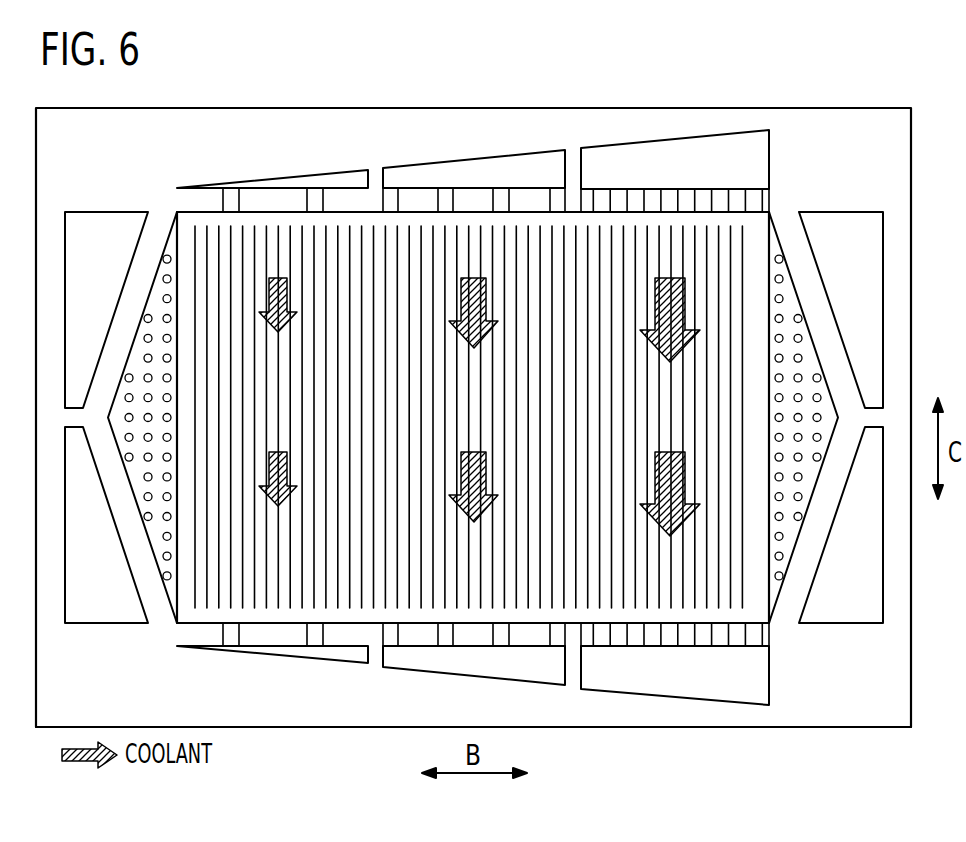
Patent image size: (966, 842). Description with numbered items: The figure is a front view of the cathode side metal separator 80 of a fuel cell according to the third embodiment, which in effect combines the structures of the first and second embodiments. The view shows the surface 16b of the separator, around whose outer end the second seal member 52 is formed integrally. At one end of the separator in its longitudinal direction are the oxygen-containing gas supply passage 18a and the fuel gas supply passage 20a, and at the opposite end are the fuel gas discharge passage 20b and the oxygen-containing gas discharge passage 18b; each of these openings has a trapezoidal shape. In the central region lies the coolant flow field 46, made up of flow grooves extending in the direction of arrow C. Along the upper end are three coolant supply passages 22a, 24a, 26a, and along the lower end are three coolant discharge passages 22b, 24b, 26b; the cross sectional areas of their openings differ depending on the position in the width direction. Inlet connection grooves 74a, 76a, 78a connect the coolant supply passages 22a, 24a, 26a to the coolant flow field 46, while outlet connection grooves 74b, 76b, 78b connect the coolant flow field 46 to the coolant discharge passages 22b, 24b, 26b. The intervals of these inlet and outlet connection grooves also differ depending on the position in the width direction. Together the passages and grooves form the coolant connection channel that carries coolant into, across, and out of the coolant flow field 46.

The cathode side metal separator 80 is at (265, 91).
The second seal member 52 is at (822, 108).
The surface 16b is at (823, 712).
The coolant flow field 46 is at (223, 244).
The fuel gas discharge passage 20b is at (106, 310).
The oxygen-containing gas discharge passage 18b is at (106, 525).
The oxygen-containing gas supply passage 18a is at (841, 310).
The fuel gas supply passage 20a is at (841, 525).
The coolant supply passage 26a is at (340, 178).
The inlet connection groove 78a is at (230, 198).
The coolant supply passage 24a is at (474, 181).
The inlet connection groove 76a is at (447, 198).
The coolant supply passage 22a is at (675, 171).
The inlet connection groove 74a is at (622, 198).
The coolant discharge passage 26b is at (333, 655).
The outlet connection groove 78b is at (230, 640).
The coolant discharge passage 24b is at (474, 654).
The outlet connection groove 76b is at (448, 638).
The coolant discharge passage 22b is at (675, 667).
The outlet connection groove 74b is at (622, 638).